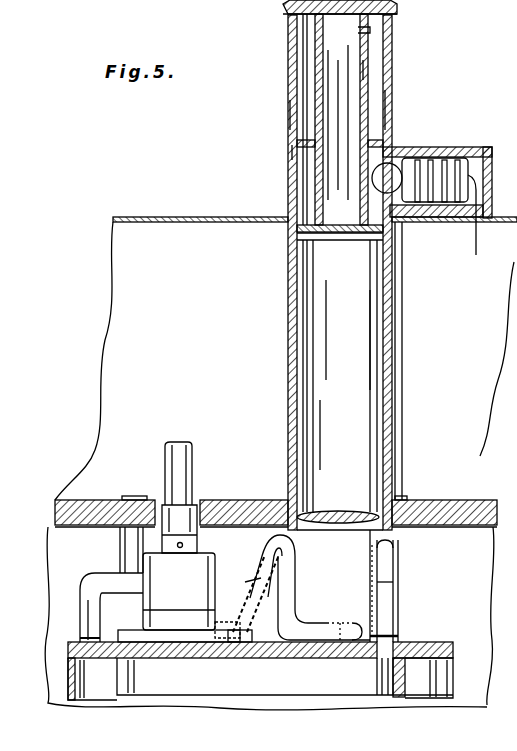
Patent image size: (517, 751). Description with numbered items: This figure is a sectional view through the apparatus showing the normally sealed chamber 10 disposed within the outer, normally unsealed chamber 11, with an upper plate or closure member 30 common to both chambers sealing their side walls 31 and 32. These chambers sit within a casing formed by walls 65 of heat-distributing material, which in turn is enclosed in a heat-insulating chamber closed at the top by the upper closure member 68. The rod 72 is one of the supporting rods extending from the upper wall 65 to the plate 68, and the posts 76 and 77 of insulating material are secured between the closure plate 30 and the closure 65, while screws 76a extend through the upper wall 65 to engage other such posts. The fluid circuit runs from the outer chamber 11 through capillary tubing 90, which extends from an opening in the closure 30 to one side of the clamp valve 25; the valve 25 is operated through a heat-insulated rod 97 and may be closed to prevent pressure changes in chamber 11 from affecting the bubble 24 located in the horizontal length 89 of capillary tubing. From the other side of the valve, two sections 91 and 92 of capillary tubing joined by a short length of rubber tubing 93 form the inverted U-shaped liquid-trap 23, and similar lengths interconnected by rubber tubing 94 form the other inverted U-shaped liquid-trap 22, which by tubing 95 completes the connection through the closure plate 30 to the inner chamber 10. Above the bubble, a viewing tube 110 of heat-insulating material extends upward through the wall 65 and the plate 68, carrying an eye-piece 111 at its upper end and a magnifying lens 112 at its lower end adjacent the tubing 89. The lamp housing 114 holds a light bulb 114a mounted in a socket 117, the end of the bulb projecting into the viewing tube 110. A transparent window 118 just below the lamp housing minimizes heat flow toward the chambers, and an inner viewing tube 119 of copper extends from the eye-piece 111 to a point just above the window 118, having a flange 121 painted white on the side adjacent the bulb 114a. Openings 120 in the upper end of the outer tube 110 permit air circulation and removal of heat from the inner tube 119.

The normally sealed chamber 10 is at (280, 680).
The outer chamber 11 is at (108, 680).
The inverted U-shaped liquid-trap 22 is at (386, 545).
The inverted U-shaped liquid-trap 23 is at (285, 545).
The bubble 24 is at (331, 671).
The clamp valve 25 is at (188, 584).
The upper plate or closure member 30 is at (172, 658).
The side wall 31 is at (406, 683).
The side wall 32 is at (455, 660).
The walls of heat-distributing material 65 is at (418, 500).
The upper closure member 68 is at (133, 222).
The supporting rod 72 is at (398, 367).
The post of insulating material 76 is at (392, 530).
The screw 76a is at (134, 496).
The post of insulating material 77 is at (118, 543).
The horizontal length of capillary tubing 89 is at (322, 622).
The capillary tubing 90 is at (80, 617).
The section of capillary tubing 91 is at (242, 606).
The section of capillary tubing 92 is at (297, 577).
The rubber tubing 93 is at (250, 572).
The rubber tubing 94 is at (395, 582).
The tubing 95 is at (396, 622).
The heat-insulated rod 97 is at (188, 455).
The viewing tube 110 is at (382, 339).
The eye-piece 111 is at (372, 30).
The magnifying lens 112 is at (351, 512).
The lamp housing 114 is at (462, 147).
The lamp or light bulb 114a is at (390, 163).
The socket or receptacle 117 is at (447, 205).
The transparent window 118 is at (360, 234).
The inner viewing tube 119 is at (366, 70).
The openings 120 is at (389, 114).
The flange 121 is at (290, 150).